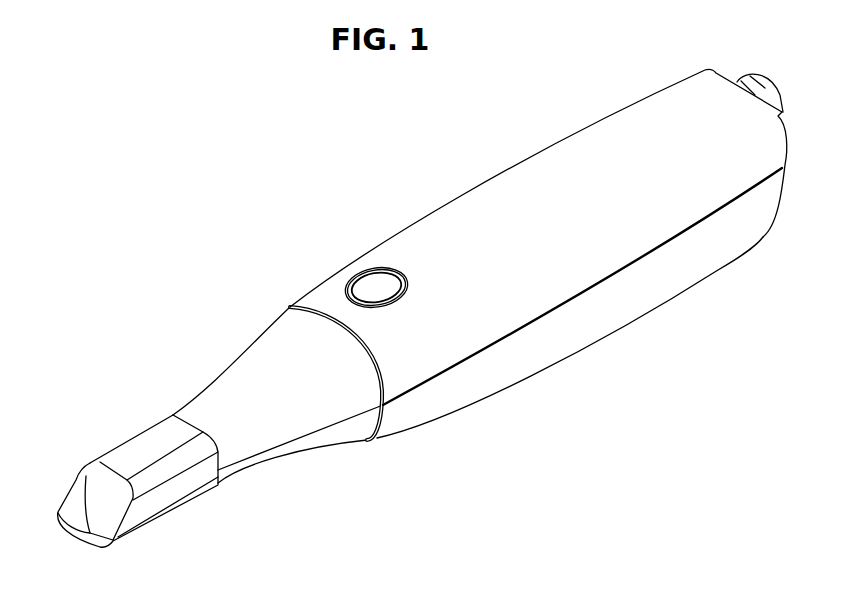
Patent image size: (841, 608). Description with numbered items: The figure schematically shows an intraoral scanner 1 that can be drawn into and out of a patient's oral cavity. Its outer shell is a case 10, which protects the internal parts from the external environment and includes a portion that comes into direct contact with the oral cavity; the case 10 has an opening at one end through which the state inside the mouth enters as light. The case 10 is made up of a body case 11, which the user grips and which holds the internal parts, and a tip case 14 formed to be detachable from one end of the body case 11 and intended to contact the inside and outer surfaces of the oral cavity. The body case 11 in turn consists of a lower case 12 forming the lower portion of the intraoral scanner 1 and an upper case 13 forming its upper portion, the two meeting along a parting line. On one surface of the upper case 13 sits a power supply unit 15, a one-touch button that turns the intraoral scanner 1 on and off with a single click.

The intraoral scanner 1 is at (208, 178).
The case 10 is at (480, 297).
The body case 11 is at (587, 443).
The lower case 12 is at (555, 360).
The upper case 13 is at (593, 245).
The tip case 14 is at (300, 415).
The power supply unit 15 is at (376, 285).